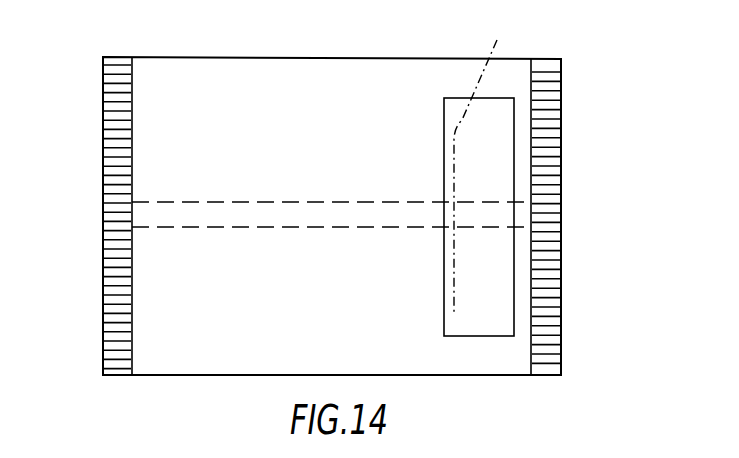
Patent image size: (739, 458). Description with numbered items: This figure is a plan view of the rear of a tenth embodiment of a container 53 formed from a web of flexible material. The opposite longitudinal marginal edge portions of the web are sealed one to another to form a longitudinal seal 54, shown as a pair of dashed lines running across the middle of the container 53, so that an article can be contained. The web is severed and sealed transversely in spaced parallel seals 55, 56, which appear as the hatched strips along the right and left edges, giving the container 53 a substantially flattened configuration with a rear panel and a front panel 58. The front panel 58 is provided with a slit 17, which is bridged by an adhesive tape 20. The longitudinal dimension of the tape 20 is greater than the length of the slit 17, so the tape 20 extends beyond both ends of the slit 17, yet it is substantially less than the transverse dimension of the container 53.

The container 53 is at (182, 50).
The transverse seal 56 is at (102, 130).
The transverse seal 55 is at (550, 97).
The longitudinal seal 54 is at (314, 199).
The adhesive tape 20 is at (499, 177).
The slit 17 is at (487, 165).
The front panel 58 is at (323, 307).